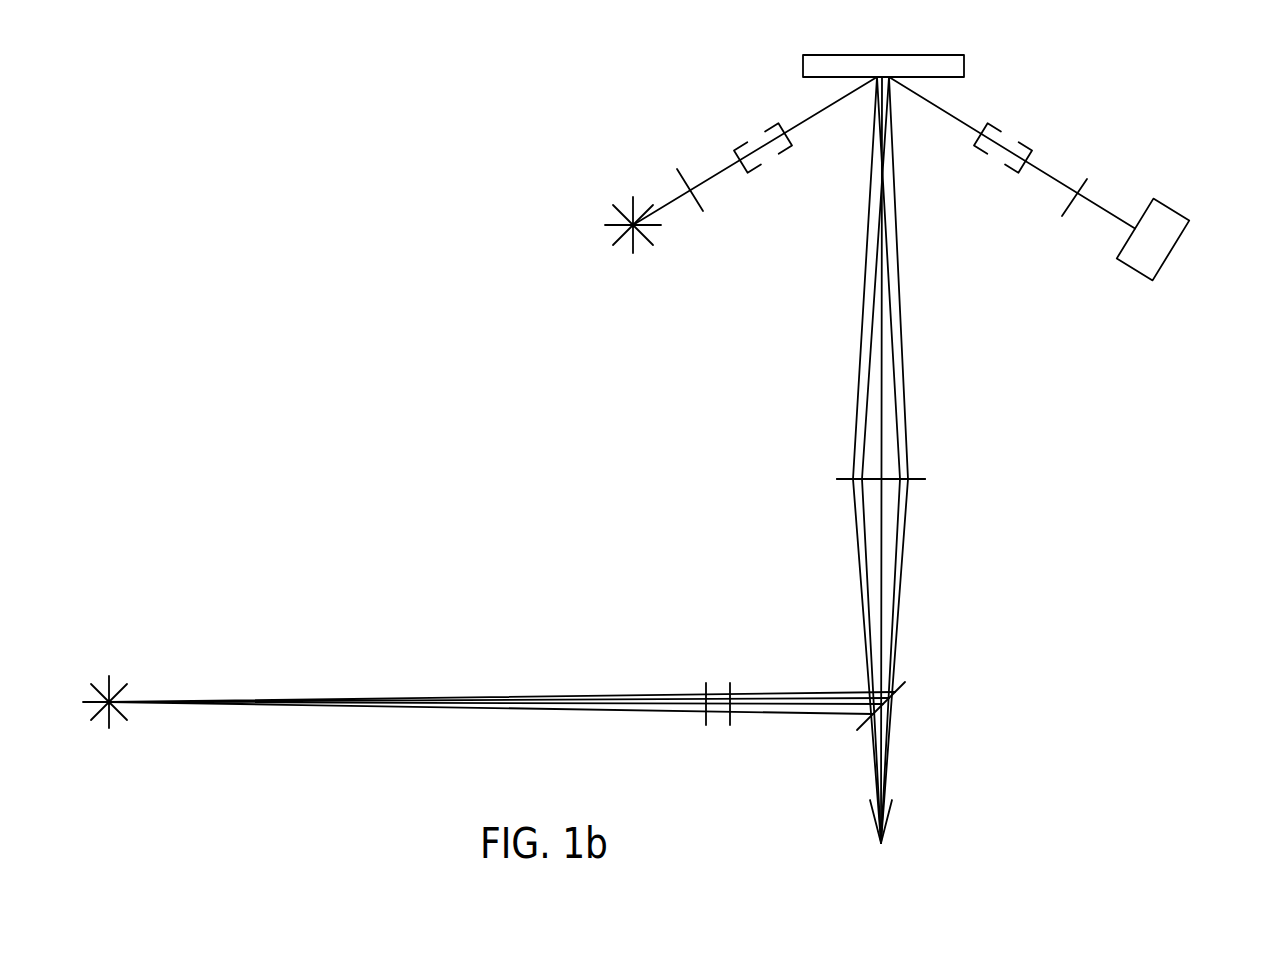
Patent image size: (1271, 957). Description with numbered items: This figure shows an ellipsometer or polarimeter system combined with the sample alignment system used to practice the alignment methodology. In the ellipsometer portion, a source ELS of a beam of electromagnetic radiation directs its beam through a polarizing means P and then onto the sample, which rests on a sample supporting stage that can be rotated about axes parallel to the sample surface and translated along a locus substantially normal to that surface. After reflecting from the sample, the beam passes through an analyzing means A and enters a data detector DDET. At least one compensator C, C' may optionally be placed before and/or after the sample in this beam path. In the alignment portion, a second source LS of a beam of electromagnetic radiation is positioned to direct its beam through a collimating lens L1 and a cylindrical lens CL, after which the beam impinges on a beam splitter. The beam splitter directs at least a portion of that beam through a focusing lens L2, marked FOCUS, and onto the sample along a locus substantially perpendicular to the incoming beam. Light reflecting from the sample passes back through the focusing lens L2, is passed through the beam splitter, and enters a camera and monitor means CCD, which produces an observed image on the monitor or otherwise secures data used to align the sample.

The source of a beam of electromagnetic radiation ELS is at (714, 171).
The polarizing means P is at (704, 216).
The compensator C is at (730, 129).
The compensator C' is at (1031, 129).
The analyzing means A is at (1095, 167).
The data detector DDET is at (1069, 178).
The focusing lens L2 is at (928, 486).
The focusing lens FOCUS is at (933, 480).
The camera and monitor means CCD is at (886, 841).
The source of a beam of electromagnetic radiation LS is at (469, 702).
The collimating lens L1 is at (702, 727).
The cylindrical lens CL is at (733, 730).